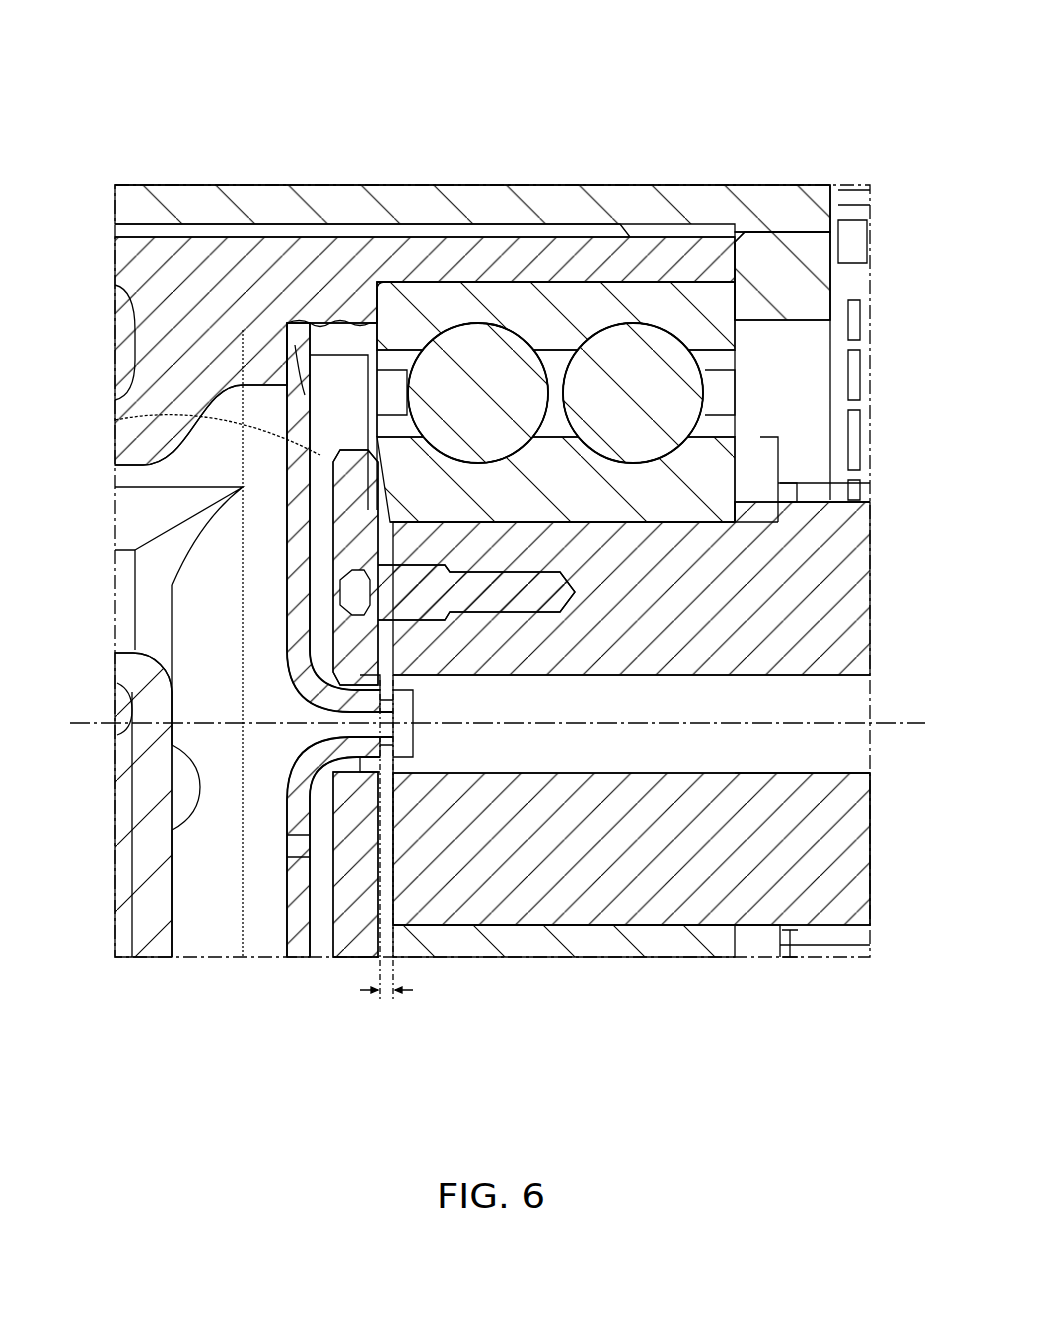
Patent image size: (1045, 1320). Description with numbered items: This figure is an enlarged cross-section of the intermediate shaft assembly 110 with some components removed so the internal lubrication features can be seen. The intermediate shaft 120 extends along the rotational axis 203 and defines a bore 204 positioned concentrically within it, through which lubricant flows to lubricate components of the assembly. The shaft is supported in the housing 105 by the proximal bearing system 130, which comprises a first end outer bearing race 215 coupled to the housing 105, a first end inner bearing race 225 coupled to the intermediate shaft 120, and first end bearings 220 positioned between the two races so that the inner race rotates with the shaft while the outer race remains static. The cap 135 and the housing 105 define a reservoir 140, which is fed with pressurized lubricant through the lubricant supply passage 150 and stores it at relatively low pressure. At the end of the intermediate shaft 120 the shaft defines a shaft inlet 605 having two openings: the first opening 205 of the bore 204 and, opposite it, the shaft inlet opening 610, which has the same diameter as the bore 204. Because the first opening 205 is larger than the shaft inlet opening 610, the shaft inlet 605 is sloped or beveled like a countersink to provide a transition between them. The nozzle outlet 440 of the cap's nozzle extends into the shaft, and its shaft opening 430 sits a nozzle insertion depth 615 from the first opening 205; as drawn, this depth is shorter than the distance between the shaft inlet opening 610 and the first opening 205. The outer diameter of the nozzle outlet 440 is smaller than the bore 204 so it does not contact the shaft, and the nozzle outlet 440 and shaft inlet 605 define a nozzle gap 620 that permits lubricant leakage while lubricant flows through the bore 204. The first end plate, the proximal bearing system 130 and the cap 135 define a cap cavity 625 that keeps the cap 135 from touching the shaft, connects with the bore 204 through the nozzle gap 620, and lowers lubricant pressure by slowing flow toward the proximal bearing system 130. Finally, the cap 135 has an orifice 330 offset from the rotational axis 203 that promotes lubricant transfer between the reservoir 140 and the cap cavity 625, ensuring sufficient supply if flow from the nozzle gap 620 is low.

The intermediate shaft assembly 110 is at (808, 52).
The housing 105 is at (165, 255).
The first end outer bearing race 215 is at (628, 255).
The first end bearings 220 is at (615, 355).
The proximal bearing system 130 is at (690, 280).
The shaft inlet 605 is at (390, 662).
The cap 135 is at (300, 393).
The cap cavity 625 is at (313, 453).
The first end inner bearing race 225 is at (707, 483).
The intermediate shaft 120 is at (833, 552).
The reservoir 140 is at (197, 568).
The nozzle gap 620 is at (383, 667).
The shaft inlet opening 610 is at (415, 697).
The rotational axis 203 is at (890, 720).
The lubricant supply passage 150 is at (183, 790).
The orifice 330 is at (293, 845).
The first opening 205 is at (363, 790).
The nozzle insertion depth 615 is at (400, 993).
The shaft opening 430 is at (413, 718).
The nozzle outlet 440 is at (397, 732).
The bore 204 is at (772, 750).